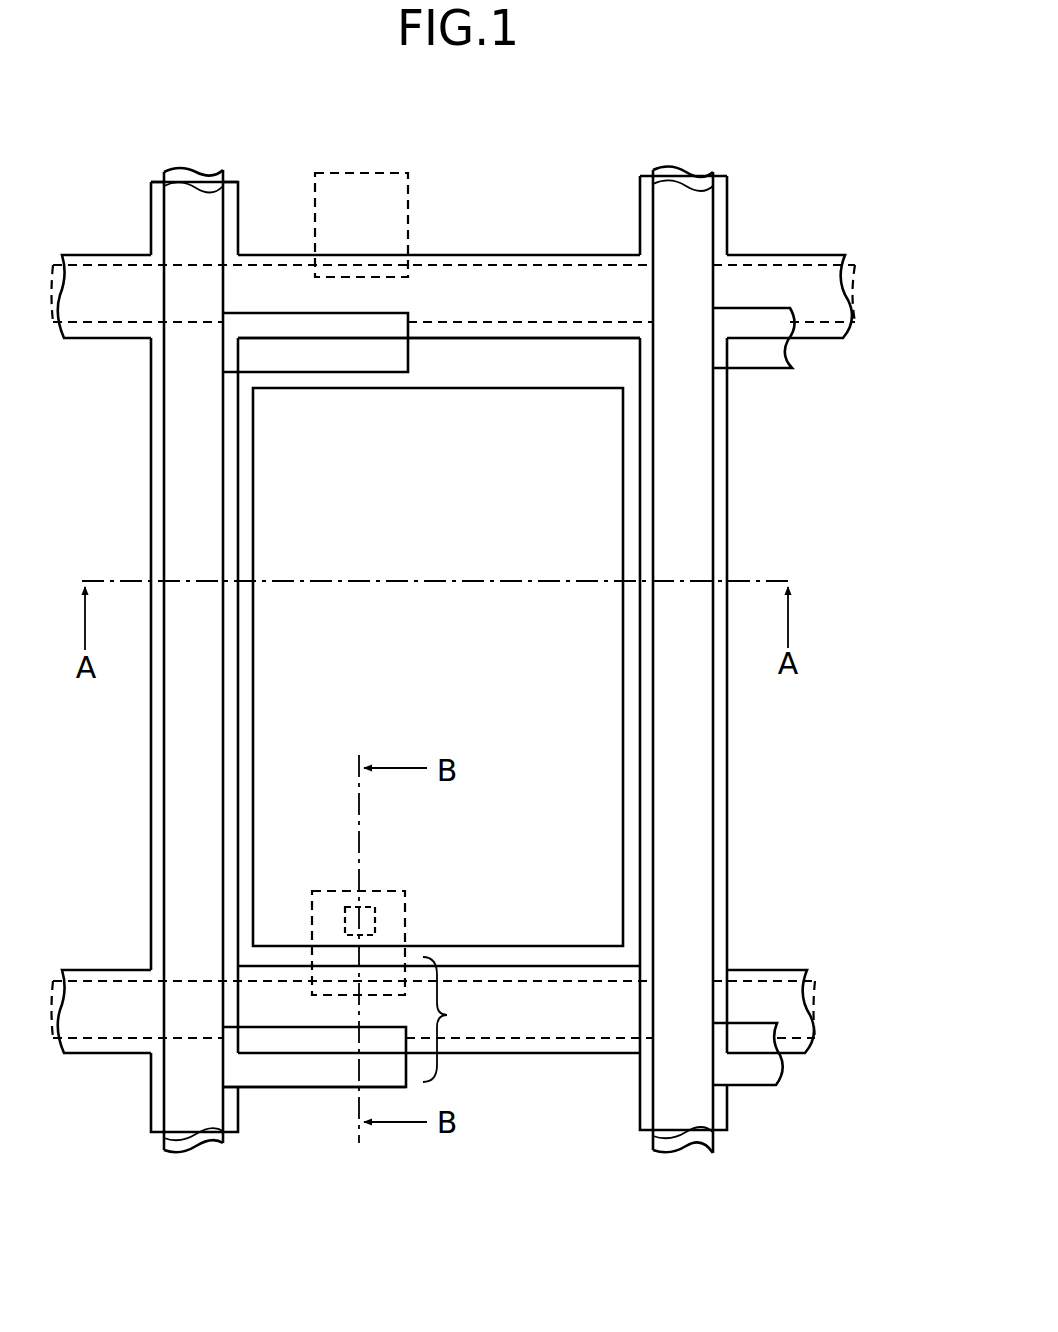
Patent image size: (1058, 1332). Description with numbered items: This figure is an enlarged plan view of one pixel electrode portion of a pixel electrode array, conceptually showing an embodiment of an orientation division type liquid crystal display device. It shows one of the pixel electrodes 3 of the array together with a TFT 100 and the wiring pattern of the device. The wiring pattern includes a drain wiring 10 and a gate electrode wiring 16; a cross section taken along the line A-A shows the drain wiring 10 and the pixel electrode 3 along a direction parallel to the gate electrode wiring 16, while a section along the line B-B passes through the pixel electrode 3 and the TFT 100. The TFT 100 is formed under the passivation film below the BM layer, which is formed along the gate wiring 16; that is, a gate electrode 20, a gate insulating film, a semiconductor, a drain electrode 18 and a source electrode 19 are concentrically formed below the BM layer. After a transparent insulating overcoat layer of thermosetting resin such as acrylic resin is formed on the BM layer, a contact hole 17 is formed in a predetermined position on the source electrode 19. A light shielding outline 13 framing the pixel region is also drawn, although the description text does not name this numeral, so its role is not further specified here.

The pixel electrode 3 is at (597, 467).
The drain wiring 10 is at (185, 1146).
The light shielding film 13 is at (636, 357).
The gate electrode wiring 16 is at (848, 283).
The contact hole 17 is at (352, 921).
The drain electrode 18 is at (347, 1070).
The source electrode 19 is at (318, 932).
The gate electrode 20 is at (327, 1010).
The TFT (thin film transistor) 100 is at (449, 1018).